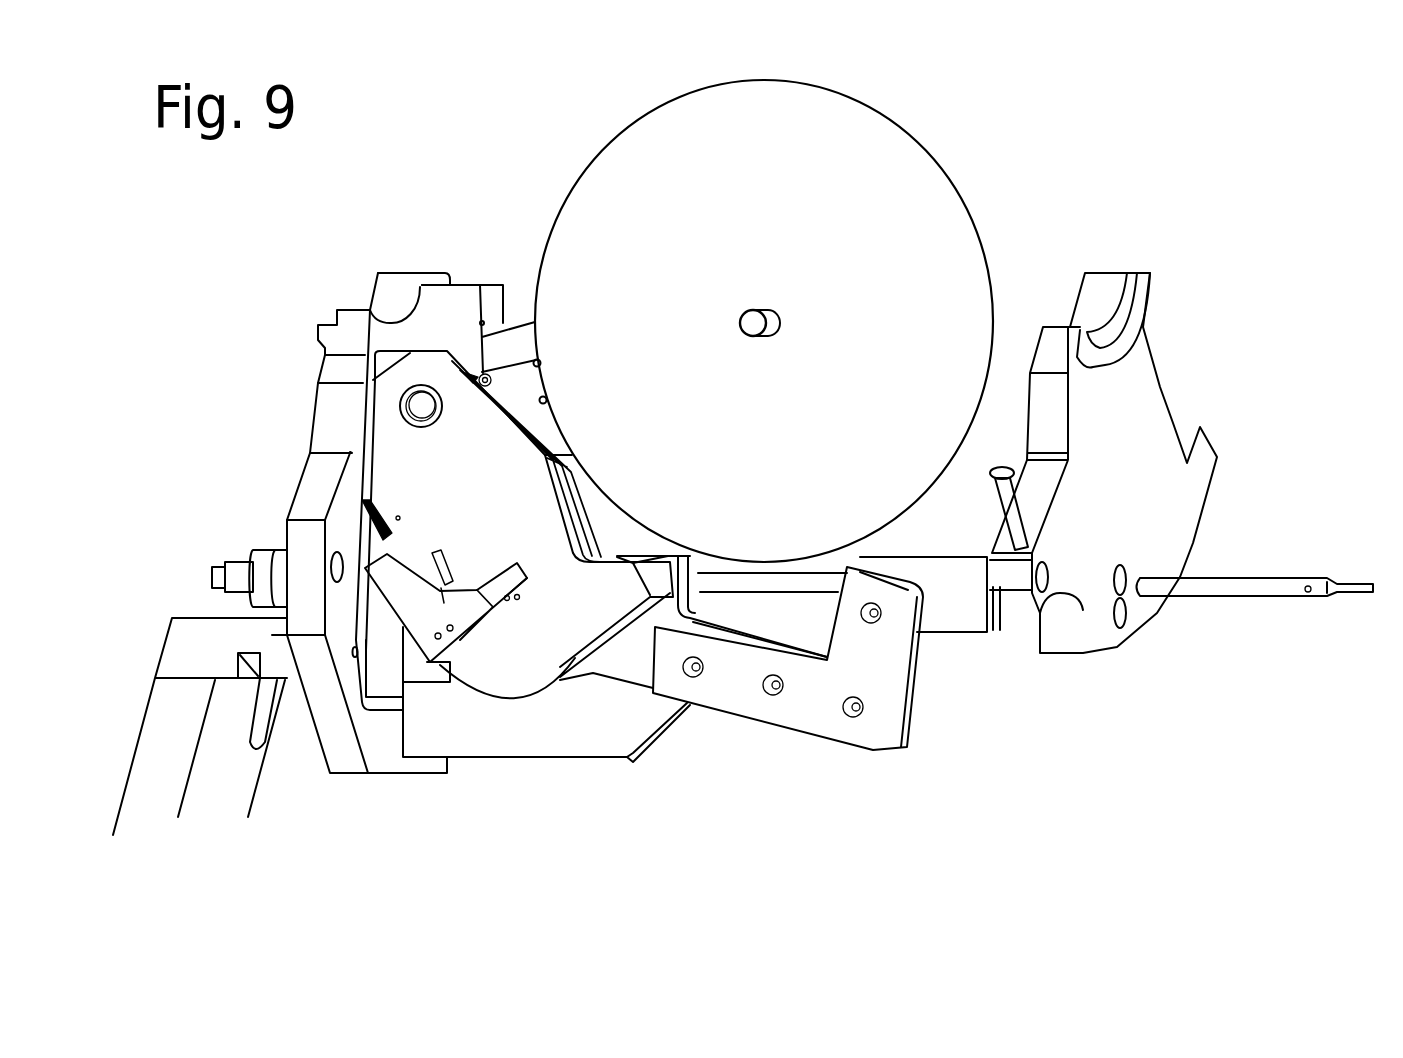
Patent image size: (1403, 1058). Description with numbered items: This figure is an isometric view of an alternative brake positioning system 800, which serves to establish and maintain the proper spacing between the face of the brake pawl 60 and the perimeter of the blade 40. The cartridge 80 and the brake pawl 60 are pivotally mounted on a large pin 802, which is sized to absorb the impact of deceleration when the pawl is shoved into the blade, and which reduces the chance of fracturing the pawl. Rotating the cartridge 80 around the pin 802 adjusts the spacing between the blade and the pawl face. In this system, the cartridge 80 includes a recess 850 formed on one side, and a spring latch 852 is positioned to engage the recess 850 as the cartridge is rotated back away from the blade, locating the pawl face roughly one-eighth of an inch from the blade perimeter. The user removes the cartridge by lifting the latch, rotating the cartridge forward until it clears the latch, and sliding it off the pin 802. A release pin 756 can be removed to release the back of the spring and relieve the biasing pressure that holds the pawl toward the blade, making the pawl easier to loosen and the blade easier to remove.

The blade 40 is at (758, 417).
The brake pawl 60 is at (590, 507).
The cartridge 80 is at (484, 521).
The release pin 756 is at (447, 563).
The brake positioning system 800 is at (481, 731).
The pin 802 is at (433, 427).
The recess 850 is at (508, 602).
The spring latch 852 is at (530, 592).